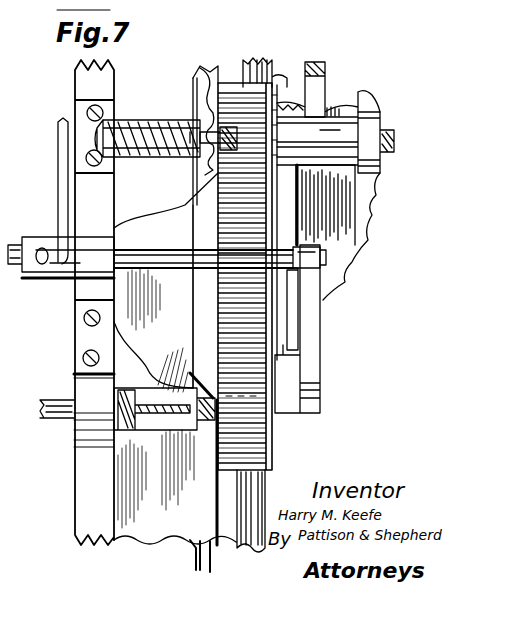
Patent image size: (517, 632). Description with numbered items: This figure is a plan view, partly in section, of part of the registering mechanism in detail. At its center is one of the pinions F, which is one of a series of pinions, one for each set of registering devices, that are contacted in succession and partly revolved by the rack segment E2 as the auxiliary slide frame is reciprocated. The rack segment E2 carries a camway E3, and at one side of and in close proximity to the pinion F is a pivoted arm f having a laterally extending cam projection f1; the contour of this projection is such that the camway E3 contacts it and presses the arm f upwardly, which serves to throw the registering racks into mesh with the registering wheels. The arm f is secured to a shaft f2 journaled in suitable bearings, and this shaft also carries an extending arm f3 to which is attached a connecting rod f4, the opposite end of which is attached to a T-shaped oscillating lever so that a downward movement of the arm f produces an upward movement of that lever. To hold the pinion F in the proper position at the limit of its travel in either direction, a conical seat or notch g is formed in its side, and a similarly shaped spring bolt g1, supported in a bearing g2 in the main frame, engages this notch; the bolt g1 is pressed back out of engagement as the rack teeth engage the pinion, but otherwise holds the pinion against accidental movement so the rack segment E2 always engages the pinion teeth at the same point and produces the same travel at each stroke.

The rack segment E2 is at (237, 302).
The camway E3 is at (285, 222).
The pinion F is at (272, 92).
The pivoted arm f is at (315, 93).
The cam projection f1 is at (303, 113).
The shaft f2 is at (158, 255).
The extending arm f3 is at (48, 253).
The connecting rod f4 is at (65, 172).
The conical seat or notch g is at (208, 70).
The spring bolt g1 is at (203, 480).
The bearing g2 is at (147, 122).